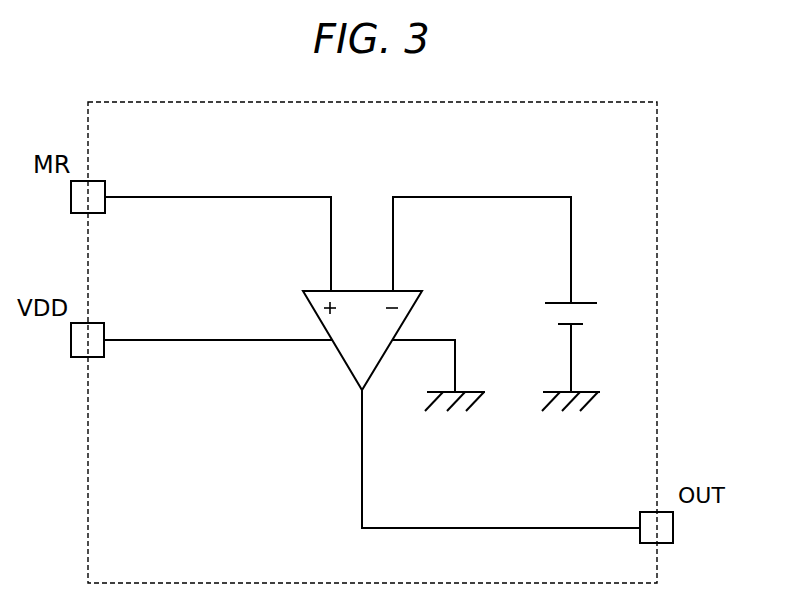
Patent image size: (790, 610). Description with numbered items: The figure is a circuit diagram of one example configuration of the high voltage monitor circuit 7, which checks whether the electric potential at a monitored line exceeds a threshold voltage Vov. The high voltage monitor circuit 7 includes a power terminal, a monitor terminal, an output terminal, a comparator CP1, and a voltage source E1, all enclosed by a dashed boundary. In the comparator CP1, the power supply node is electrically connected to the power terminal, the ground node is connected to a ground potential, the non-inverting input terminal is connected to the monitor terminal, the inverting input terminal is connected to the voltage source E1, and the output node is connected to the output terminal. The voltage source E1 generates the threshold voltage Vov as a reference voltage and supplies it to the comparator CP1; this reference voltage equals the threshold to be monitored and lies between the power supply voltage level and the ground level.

The high voltage monitor circuit 7 is at (585, 102).
The comparator CP1 is at (321, 375).
The voltage source E1 is at (534, 333).
The threshold voltage Vov is at (600, 348).